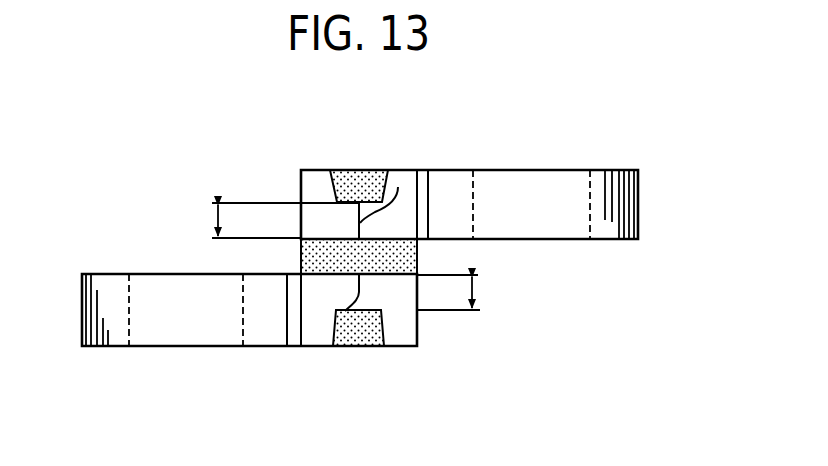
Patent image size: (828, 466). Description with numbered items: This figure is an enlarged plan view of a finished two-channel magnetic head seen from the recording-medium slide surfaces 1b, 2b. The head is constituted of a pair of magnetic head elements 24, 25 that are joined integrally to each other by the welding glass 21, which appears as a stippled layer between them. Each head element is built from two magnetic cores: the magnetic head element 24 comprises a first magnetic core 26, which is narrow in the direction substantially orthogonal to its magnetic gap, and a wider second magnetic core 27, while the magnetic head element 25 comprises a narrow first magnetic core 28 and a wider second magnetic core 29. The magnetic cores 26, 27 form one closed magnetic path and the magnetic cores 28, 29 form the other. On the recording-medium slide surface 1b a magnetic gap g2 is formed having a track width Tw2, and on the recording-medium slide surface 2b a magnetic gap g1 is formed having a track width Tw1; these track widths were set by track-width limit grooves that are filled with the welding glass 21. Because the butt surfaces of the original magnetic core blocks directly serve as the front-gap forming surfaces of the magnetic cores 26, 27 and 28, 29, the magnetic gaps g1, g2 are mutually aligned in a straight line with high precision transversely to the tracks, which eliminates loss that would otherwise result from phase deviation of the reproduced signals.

The magnetic head element 24 is at (483, 159).
The recording-medium slide surface 1b is at (408, 180).
The second magnetic core 27 is at (557, 177).
The first magnetic core 26 is at (317, 183).
The magnetic gap g2 is at (398, 187).
The track width Tw2 is at (259, 220).
The welding glass 21 is at (317, 253).
The magnetic head element 25 is at (229, 357).
The second magnetic core 29 is at (151, 335).
The recording-medium slide surface 2b is at (318, 323).
The magnetic gap g1 is at (345, 347).
The first magnetic core 28 is at (402, 322).
The track width Tw1 is at (471, 292).